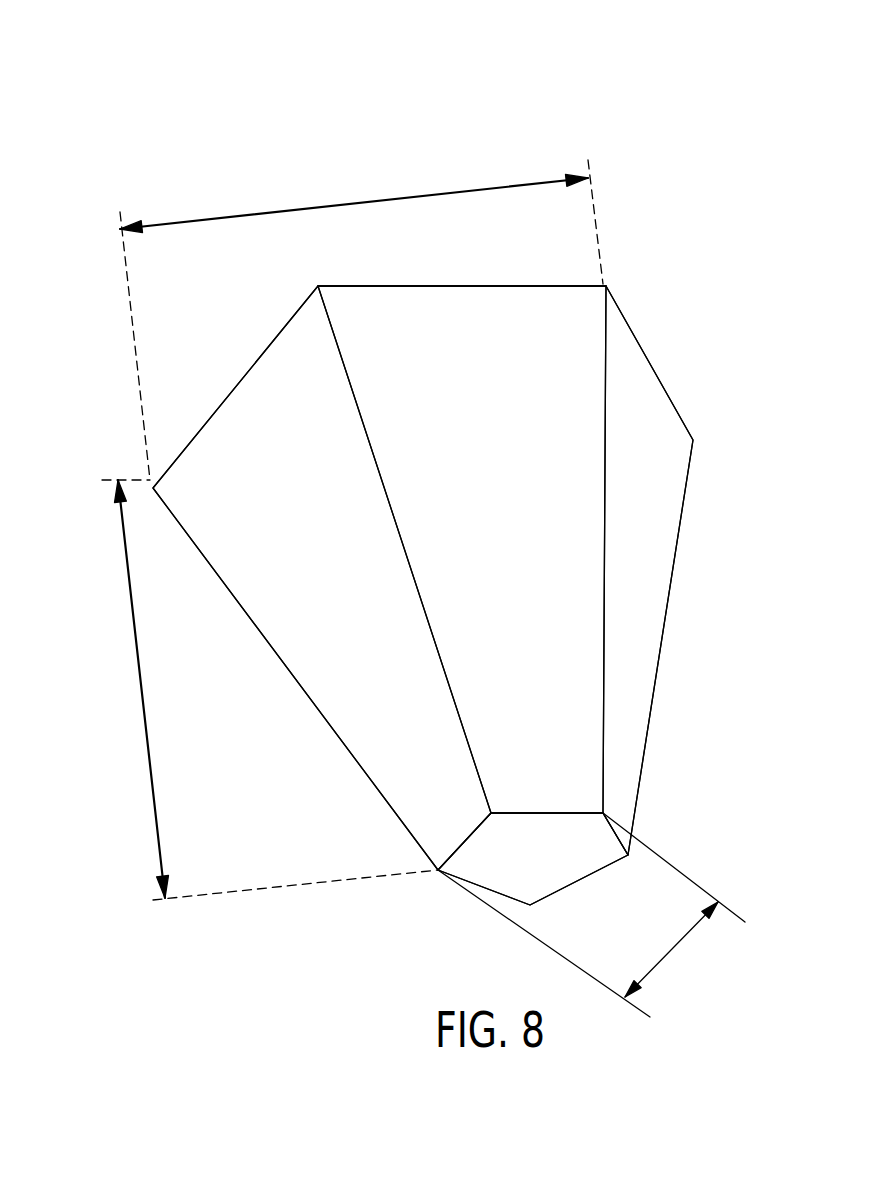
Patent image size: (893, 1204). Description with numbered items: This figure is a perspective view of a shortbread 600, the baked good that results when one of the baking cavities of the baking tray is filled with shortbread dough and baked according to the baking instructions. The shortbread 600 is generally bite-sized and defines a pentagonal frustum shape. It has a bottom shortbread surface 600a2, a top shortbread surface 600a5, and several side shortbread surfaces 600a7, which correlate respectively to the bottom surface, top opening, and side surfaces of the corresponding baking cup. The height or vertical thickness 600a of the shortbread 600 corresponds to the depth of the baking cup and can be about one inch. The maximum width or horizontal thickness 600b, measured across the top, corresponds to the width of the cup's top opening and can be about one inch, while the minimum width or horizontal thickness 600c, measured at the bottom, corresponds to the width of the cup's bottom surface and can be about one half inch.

The shortbread 600 is at (512, 92).
The maximum width or horizontal thickness 600b is at (383, 199).
The height or vertical thickness 600a is at (140, 715).
The top shortbread surface 600a5 is at (482, 268).
The side shortbread surfaces 600a7 is at (570, 410).
The bottom shortbread surface 600a2 is at (570, 871).
The minimum width or horizontal thickness 600c is at (673, 950).